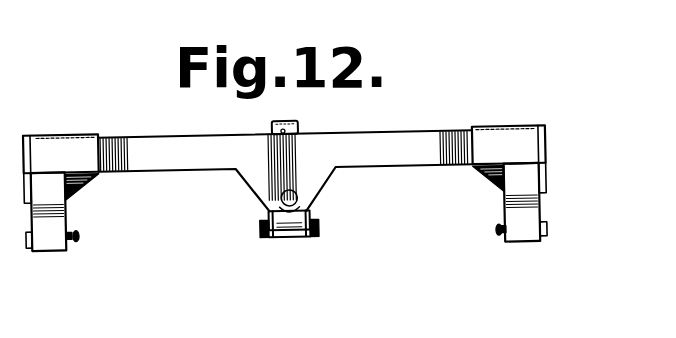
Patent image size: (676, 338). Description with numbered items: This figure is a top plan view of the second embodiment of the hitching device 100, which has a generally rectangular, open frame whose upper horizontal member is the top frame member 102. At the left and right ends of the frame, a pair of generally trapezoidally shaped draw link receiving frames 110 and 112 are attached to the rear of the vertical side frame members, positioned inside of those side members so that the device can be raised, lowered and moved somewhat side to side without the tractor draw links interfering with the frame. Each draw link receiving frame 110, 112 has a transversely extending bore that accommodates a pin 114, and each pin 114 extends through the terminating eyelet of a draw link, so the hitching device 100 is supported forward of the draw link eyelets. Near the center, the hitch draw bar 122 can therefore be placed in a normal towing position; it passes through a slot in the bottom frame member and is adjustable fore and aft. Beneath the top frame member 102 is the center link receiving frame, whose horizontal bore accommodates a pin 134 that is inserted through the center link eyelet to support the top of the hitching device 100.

The hitching device 100 is at (176, 113).
The top frame member 102 is at (393, 145).
The draw link receiving frame 110 is at (47, 240).
The draw link receiving frame 112 is at (525, 228).
The pin 114 is at (78, 238).
The hitch draw bar 122 is at (288, 123).
The pin 134 is at (287, 238).